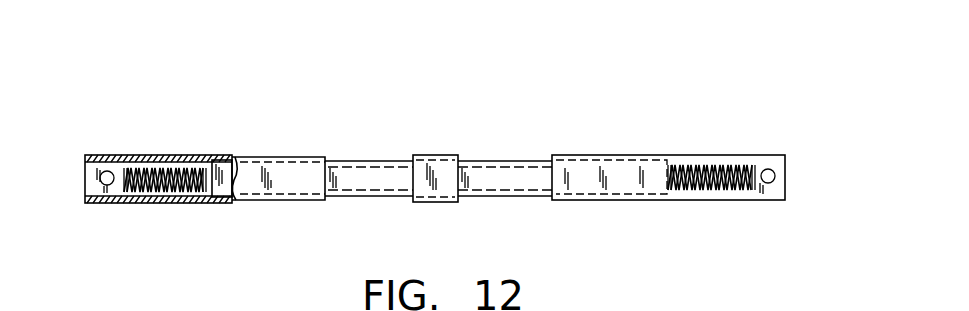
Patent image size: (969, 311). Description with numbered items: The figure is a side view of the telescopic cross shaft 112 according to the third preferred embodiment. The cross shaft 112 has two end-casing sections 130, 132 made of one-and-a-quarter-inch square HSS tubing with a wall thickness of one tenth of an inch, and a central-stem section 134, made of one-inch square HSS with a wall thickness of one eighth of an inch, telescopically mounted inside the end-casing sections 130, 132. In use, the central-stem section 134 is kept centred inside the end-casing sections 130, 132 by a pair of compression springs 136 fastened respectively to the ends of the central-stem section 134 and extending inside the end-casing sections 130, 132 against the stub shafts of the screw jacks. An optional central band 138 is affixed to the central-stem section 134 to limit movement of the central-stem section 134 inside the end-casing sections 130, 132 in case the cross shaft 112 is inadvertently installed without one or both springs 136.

The cross shaft 112 is at (664, 85).
The end-casing section 130 is at (136, 155).
The end-casing section 132 is at (707, 155).
The central-stem section 134 is at (365, 160).
The compression springs 136 is at (163, 155).
The central band 138 is at (433, 155).